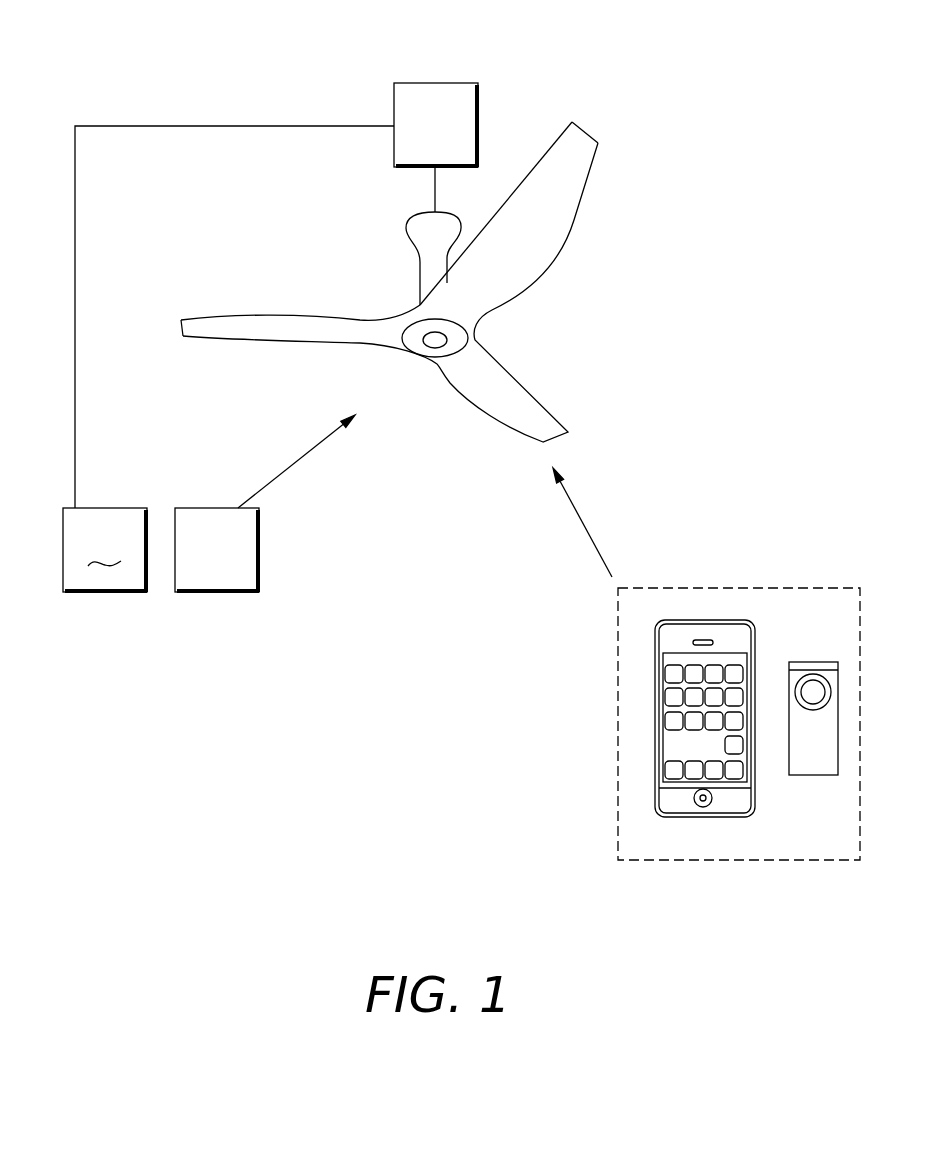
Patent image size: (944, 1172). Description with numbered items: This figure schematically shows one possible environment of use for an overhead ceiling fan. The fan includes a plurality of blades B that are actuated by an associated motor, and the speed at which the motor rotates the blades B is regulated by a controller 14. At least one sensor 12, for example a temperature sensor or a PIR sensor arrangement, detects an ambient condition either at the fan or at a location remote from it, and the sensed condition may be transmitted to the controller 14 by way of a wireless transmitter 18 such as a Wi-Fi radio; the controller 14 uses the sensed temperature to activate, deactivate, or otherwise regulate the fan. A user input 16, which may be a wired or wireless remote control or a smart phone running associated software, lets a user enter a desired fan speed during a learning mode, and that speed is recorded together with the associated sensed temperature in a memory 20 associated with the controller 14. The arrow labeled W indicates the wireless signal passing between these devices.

The sensor 12 is at (612, 92).
The controller 14 is at (412, 145).
The user input 16 is at (618, 716).
The wireless transmitter 18 is at (200, 566).
The memory 20 is at (428, 83).
The blades B is at (577, 173).
The wireless signal W is at (313, 455).